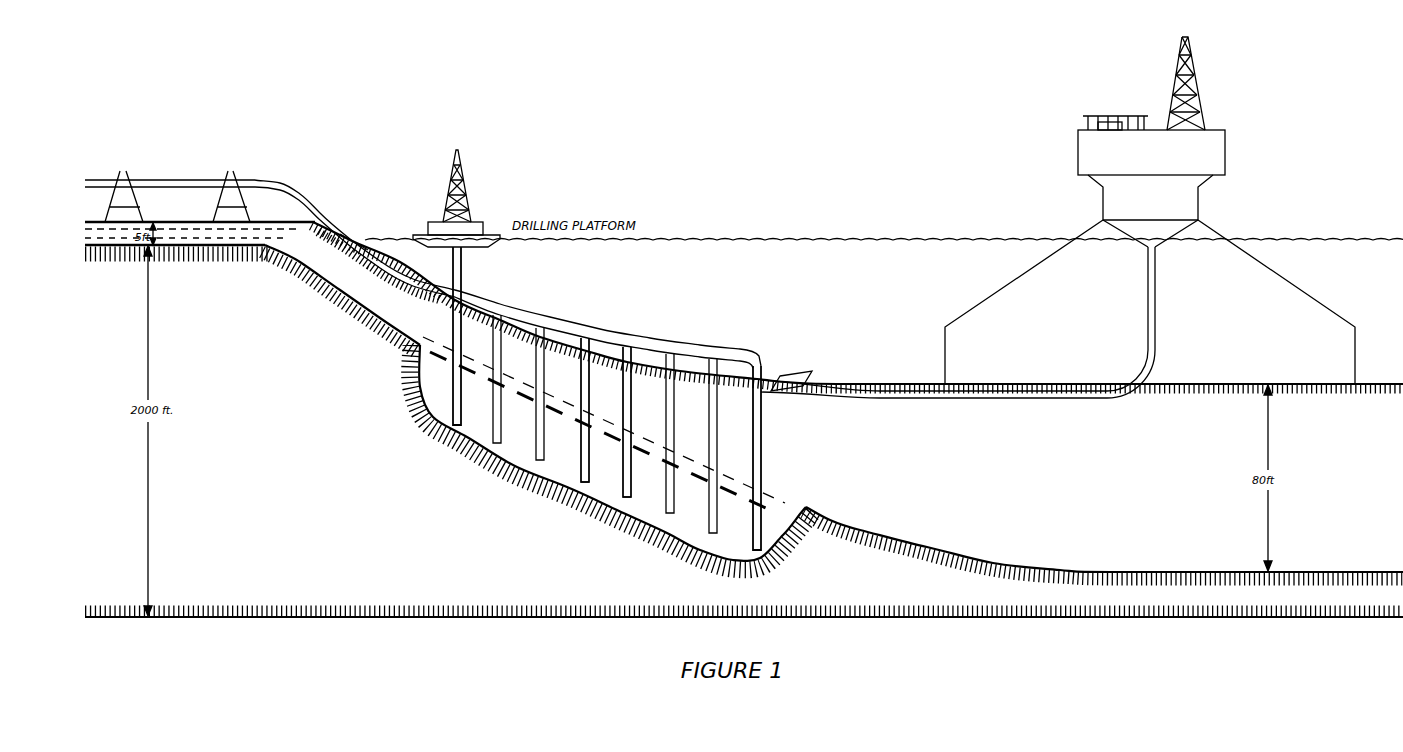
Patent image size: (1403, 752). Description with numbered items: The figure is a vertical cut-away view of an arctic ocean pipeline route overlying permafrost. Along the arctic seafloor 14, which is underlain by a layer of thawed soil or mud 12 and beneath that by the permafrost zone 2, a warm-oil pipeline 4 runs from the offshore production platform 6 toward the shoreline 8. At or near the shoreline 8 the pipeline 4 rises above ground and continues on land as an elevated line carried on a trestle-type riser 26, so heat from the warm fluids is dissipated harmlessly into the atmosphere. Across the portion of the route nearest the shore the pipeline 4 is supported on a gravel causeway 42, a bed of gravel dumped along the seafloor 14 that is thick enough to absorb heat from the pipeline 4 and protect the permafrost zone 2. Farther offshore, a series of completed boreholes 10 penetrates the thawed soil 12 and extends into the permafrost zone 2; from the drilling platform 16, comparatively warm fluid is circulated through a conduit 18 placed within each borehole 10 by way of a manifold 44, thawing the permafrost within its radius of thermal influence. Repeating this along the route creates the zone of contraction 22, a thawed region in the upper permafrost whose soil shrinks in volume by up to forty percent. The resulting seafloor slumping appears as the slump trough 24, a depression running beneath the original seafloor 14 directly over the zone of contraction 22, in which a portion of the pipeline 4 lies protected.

The permafrost zone 2 is at (262, 480).
The warm-oil pipeline 4 is at (966, 404).
The offshore production platform 6 is at (1078, 143).
The shoreline 8 is at (354, 242).
The completed boreholes 10 is at (453, 340).
The layer of thawed soil or mud 12 is at (1070, 520).
The seafloor 14 is at (778, 366).
The drilling platform 16 is at (468, 193).
The conduit 18 is at (612, 387).
The zone of contraction 22 is at (800, 505).
The slump trough 24 is at (792, 375).
The trestle-type riser 26 is at (212, 200).
The gravel causeway 42 is at (334, 238).
The manifold 44 is at (539, 306).